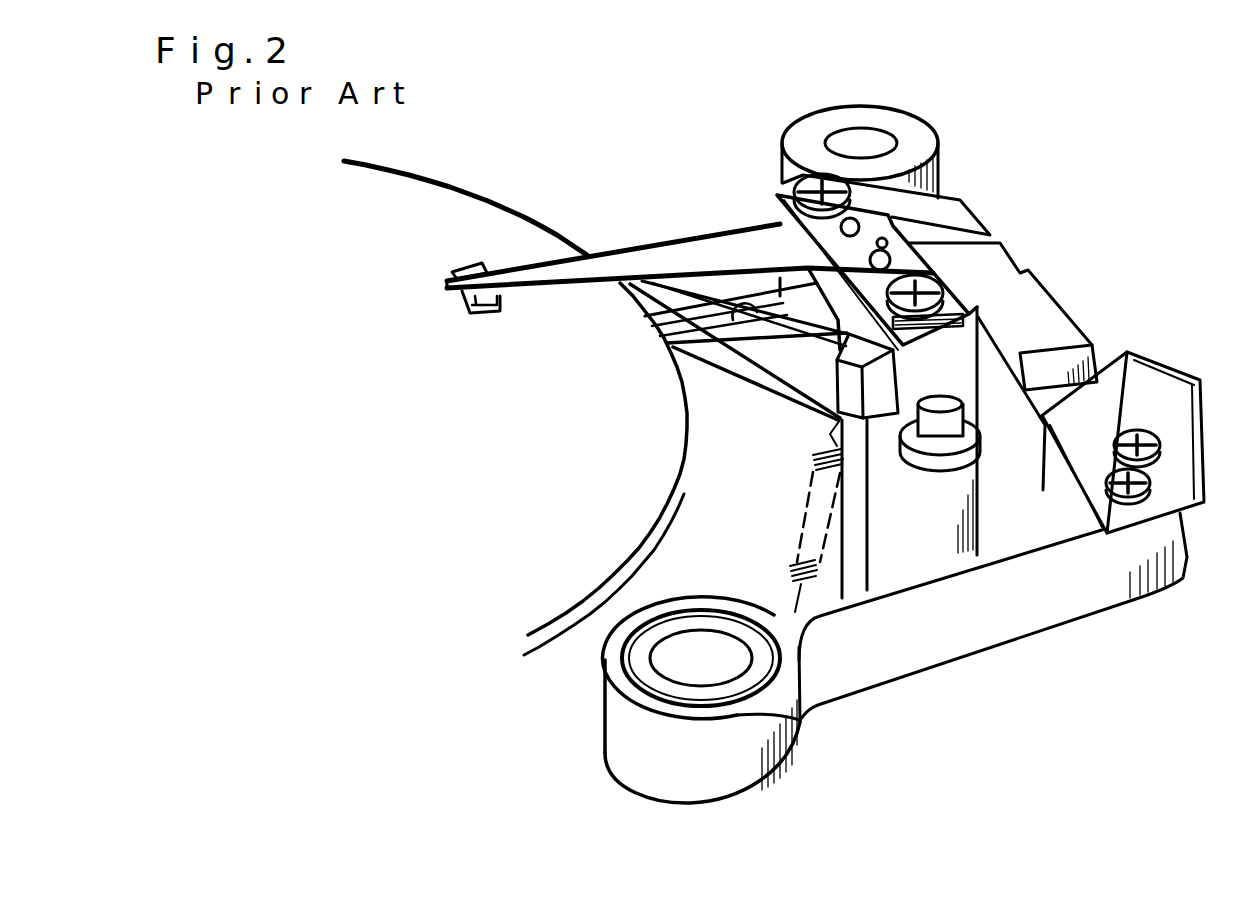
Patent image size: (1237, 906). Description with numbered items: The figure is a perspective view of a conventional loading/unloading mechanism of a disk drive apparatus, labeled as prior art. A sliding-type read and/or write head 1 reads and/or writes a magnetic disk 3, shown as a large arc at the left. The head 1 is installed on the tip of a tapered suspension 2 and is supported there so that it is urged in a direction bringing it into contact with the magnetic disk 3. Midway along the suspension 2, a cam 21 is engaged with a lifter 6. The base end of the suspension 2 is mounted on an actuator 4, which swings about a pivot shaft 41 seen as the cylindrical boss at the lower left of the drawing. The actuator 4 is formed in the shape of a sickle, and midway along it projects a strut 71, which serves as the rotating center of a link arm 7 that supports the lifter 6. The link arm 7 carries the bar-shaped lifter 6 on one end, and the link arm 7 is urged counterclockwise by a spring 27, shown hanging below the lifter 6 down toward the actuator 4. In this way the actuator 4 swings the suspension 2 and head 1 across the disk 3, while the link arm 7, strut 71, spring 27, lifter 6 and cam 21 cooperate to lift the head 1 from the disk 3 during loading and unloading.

The read and/or write head 1 is at (458, 315).
The suspension 2 is at (678, 238).
The magnetic disk 3 is at (437, 226).
The actuator 4 is at (1022, 255).
The lifter 6 is at (835, 334).
The link arm 7 is at (838, 422).
The cam 21 is at (657, 329).
The spring 27 is at (788, 567).
The pivot shaft 41 is at (617, 677).
The strut 71 is at (950, 400).